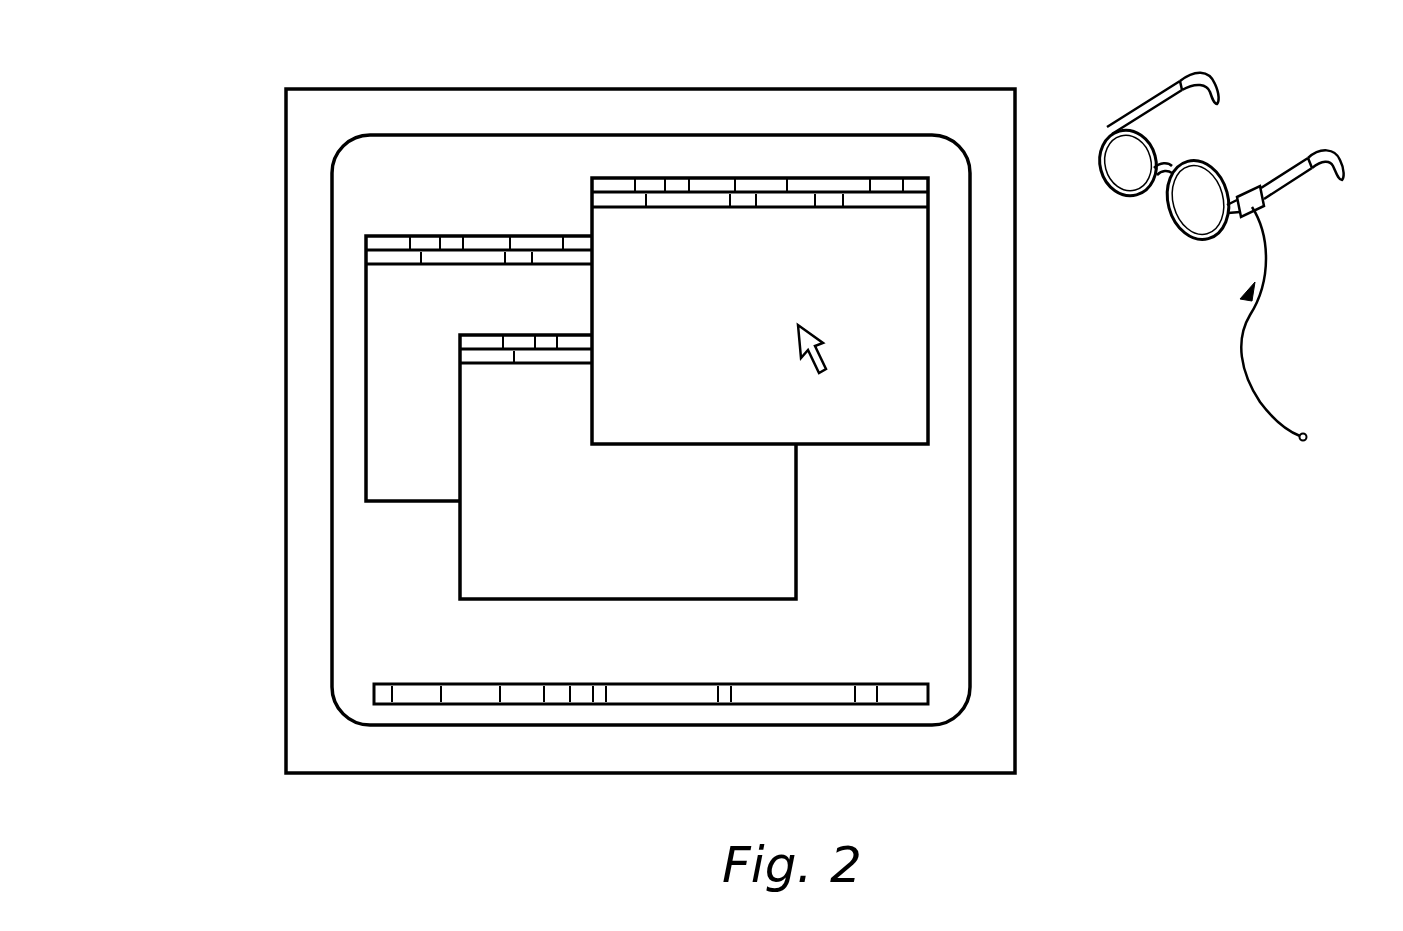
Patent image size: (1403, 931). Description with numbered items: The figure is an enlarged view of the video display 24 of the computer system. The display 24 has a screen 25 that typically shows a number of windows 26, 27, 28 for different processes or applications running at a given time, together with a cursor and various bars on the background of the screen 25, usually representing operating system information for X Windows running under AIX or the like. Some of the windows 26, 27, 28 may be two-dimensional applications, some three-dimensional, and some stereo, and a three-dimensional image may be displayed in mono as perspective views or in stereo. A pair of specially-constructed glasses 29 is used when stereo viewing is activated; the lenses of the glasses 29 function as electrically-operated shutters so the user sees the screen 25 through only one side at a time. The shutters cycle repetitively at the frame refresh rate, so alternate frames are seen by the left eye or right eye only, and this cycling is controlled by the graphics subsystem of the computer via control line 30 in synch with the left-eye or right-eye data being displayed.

The display 24 is at (285, 141).
The screen 25 is at (360, 582).
The window 26 is at (591, 205).
The window 27 is at (797, 529).
The window 28 is at (401, 197).
The glasses 29 is at (1102, 128).
The control line 30 is at (1240, 338).